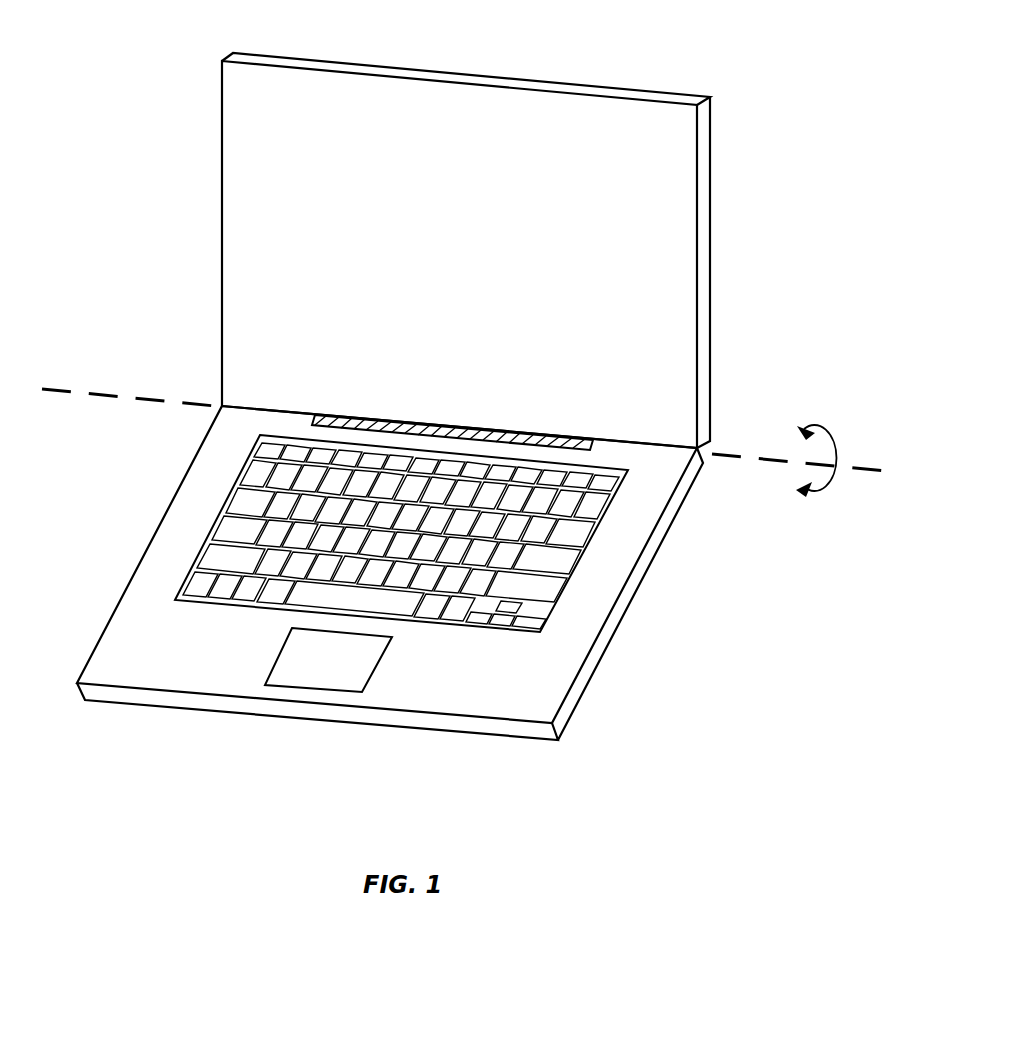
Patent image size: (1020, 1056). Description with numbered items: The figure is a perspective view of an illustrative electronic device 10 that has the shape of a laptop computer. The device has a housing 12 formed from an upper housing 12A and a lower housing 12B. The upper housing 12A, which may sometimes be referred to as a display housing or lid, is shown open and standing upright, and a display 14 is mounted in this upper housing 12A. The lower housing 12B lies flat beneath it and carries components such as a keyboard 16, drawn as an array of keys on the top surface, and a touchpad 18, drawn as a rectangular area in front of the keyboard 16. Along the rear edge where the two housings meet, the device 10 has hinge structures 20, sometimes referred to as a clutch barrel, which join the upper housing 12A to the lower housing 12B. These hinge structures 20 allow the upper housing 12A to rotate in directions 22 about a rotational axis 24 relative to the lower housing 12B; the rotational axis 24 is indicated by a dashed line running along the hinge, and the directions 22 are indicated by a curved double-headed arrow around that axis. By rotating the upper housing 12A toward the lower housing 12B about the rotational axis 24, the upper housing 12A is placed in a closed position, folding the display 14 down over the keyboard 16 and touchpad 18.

The electronic device 10 is at (764, 63).
The housing 12 is at (712, 378).
The upper housing 12A is at (210, 398).
The lower housing 12B is at (200, 412).
The display 14 is at (613, 243).
The keyboard 16 is at (553, 553).
The touchpad 18 is at (375, 670).
The hinge structures 20 is at (565, 438).
The directions 22 is at (790, 490).
The rotational axis 24 is at (110, 392).